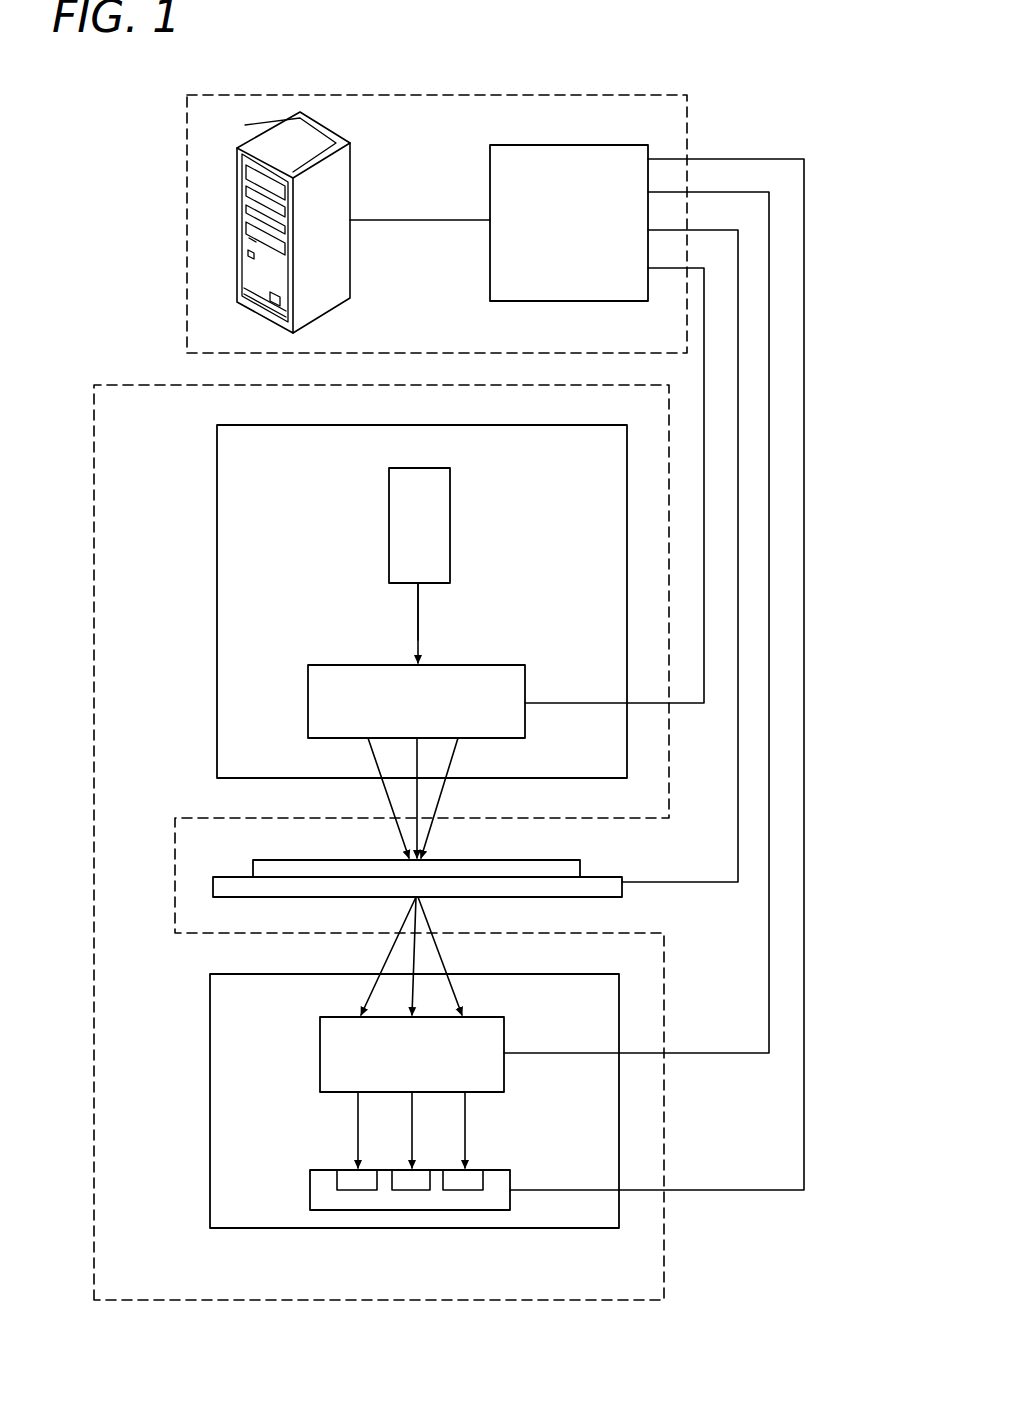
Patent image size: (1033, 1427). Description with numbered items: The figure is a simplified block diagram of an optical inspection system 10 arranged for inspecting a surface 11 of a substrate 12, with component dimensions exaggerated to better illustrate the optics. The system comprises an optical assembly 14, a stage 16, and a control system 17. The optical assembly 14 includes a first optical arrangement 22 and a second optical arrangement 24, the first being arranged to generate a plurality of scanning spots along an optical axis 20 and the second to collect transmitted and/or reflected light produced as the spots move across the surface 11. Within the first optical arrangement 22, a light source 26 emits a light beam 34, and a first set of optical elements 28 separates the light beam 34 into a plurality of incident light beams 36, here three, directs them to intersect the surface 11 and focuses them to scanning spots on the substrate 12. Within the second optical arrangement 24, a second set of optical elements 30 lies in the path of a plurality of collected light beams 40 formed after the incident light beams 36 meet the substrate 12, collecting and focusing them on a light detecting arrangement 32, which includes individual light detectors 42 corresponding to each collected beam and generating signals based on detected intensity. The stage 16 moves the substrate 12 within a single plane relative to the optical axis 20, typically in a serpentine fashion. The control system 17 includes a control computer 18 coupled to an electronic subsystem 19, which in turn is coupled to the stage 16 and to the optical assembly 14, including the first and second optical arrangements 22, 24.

The optical inspection system 10 is at (150, 297).
The surface 11 is at (290, 860).
The substrate 12 is at (580, 868).
The optical assembly 14 is at (156, 440).
The stage 16 is at (583, 897).
The control system 17 is at (446, 344).
The control computer 18 is at (350, 170).
The electronic subsystem 19 is at (490, 245).
The optical axis 20 is at (418, 617).
The first optical arrangement 22 is at (281, 474).
The second optical arrangement 24 is at (258, 1009).
The light source 26 is at (450, 530).
The first set of optical elements 28 is at (308, 705).
The second set of optical elements 30 is at (320, 1080).
The light detecting arrangement 32 is at (510, 1205).
The light beam 34 is at (418, 630).
The incident light beams 36 is at (388, 798).
The collected light beams 40 is at (382, 950).
The light detectors 42 is at (345, 1180).